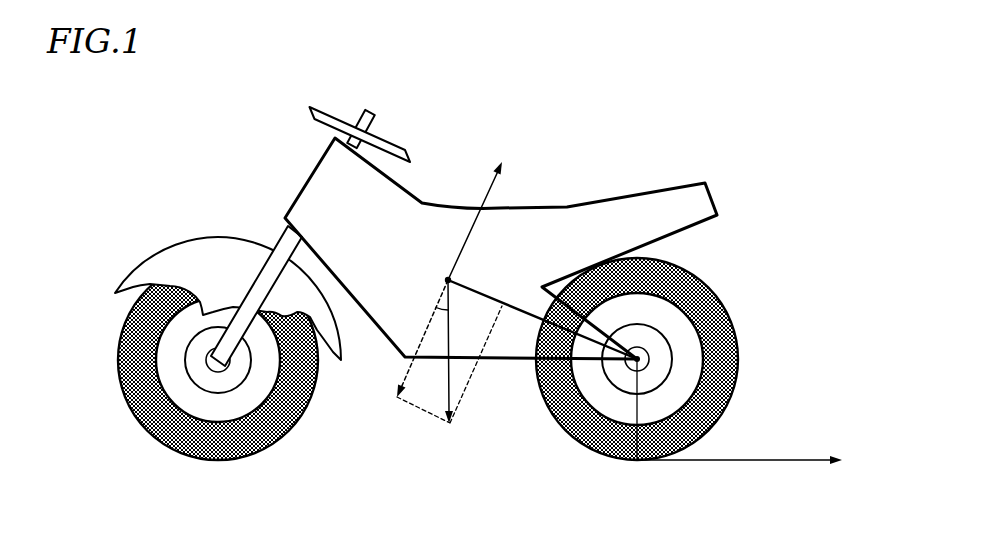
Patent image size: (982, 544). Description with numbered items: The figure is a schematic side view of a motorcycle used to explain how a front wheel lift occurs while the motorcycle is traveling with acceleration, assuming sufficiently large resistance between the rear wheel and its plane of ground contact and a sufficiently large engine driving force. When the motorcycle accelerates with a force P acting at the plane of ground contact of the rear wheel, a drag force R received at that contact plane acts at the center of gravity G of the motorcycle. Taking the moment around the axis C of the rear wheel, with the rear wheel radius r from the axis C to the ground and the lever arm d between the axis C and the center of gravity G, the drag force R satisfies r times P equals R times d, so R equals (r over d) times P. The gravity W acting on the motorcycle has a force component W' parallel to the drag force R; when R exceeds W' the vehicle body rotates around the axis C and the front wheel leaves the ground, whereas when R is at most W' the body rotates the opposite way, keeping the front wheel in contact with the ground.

The center of gravity G is at (441, 272).
The drag force R is at (480, 206).
The distance between center of gravity and rear wheel axis d is at (637, 359).
The gravity W is at (455, 368).
The force component of gravity W' is at (442, 355).
The rear wheel radius r is at (643, 409).
The axis of the rear wheel C is at (645, 351).
The accelerating force P is at (750, 463).